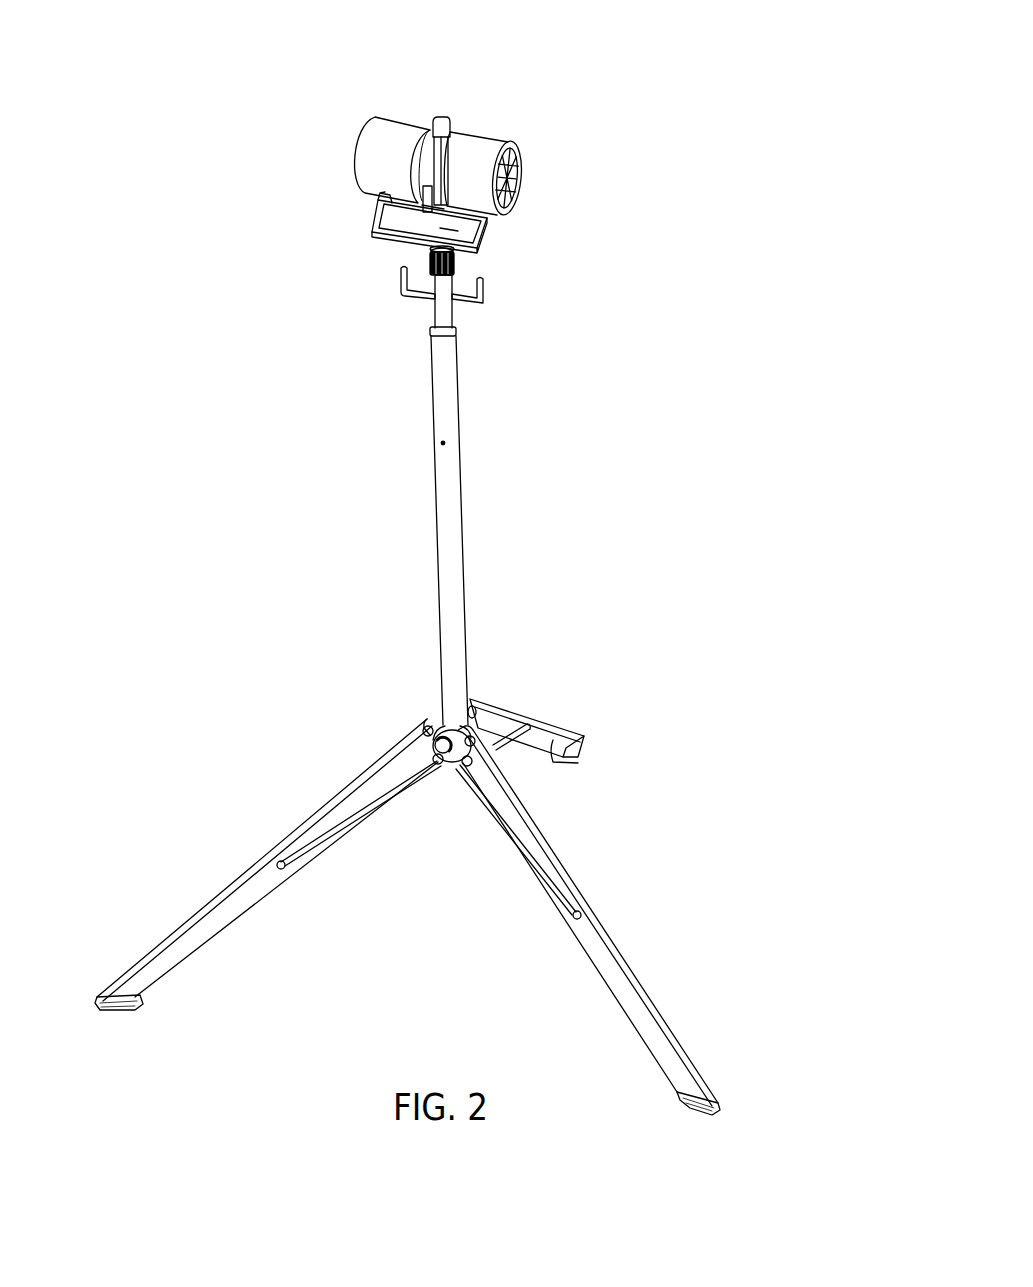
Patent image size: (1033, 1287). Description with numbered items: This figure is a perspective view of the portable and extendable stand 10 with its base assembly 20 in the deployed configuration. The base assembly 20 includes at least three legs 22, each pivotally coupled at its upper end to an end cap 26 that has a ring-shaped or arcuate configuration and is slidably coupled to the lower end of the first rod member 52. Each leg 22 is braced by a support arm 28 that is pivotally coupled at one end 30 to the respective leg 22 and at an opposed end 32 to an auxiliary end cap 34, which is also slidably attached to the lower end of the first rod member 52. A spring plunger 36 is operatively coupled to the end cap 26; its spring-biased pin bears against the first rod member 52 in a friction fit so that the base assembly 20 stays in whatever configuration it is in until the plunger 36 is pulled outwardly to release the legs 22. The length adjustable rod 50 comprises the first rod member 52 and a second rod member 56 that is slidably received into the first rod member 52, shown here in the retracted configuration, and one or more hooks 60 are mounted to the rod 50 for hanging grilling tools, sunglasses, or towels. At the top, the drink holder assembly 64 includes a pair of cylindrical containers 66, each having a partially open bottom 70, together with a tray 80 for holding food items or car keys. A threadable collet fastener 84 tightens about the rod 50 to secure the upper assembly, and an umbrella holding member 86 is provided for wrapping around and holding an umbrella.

The stand 10 is at (573, 72).
The base assembly 20 is at (372, 743).
The leg 22 is at (557, 733).
The end cap 26 is at (470, 722).
The support arm 28 is at (347, 823).
The end of support arm 30 is at (293, 866).
The opposed end of support arm 32 is at (425, 772).
The auxiliary end cap 34 is at (452, 768).
The spring plunger 36 is at (433, 727).
The length adjustable rod 50 is at (412, 355).
The first rod member 52 is at (458, 405).
The second rod member 56 is at (432, 316).
The hook 60 is at (497, 296).
The drink holder assembly 64 is at (352, 103).
The cylindrical container 66 is at (395, 138).
The partially open bottom 70 is at (522, 178).
The tray 80 is at (390, 220).
The threadable fastener 84 is at (460, 262).
The umbrella holding member 86 is at (447, 117).